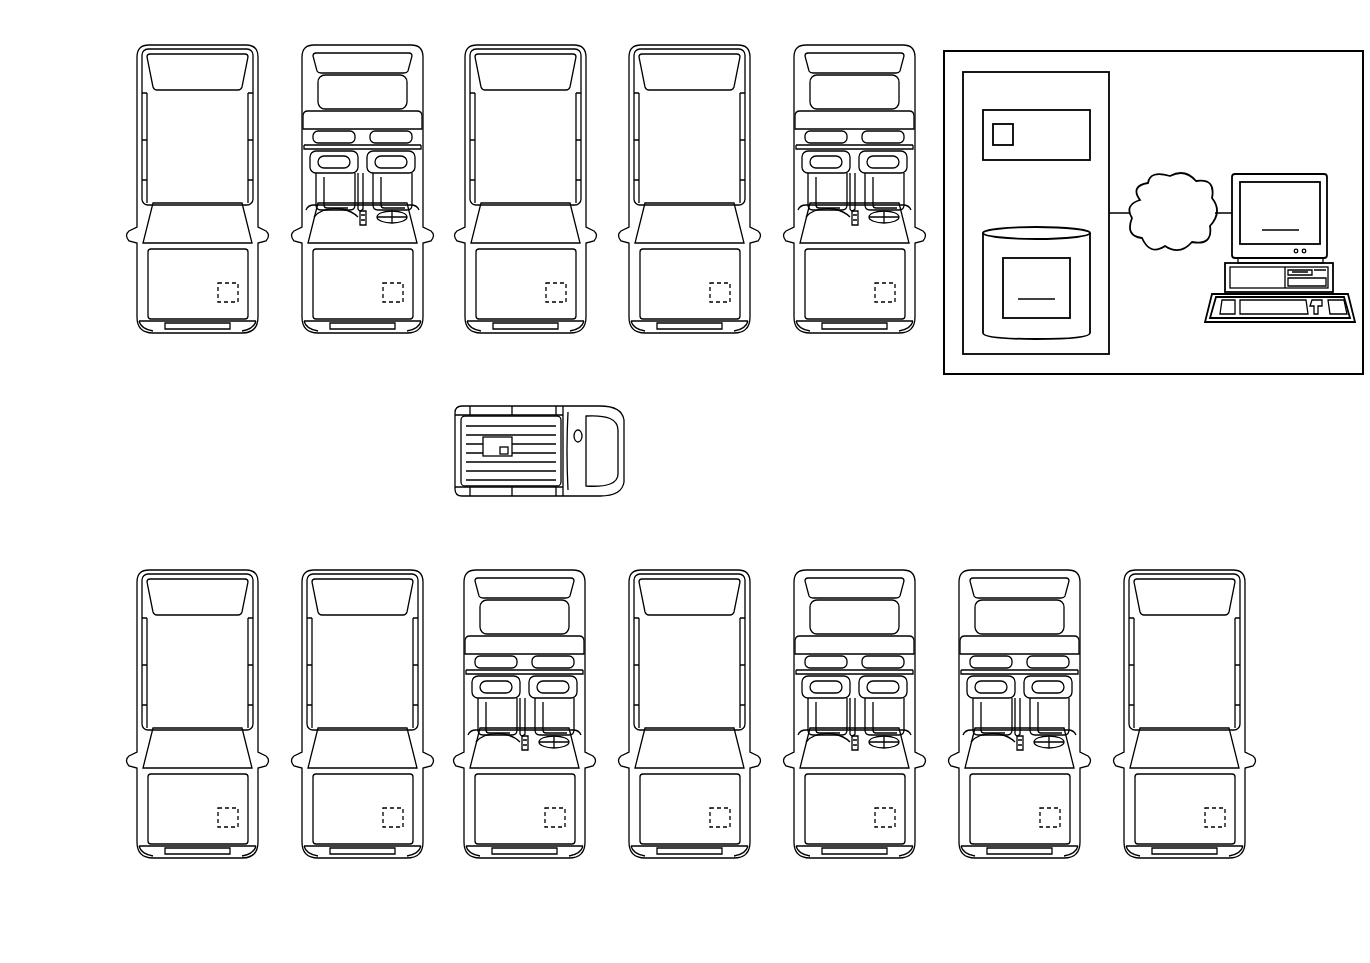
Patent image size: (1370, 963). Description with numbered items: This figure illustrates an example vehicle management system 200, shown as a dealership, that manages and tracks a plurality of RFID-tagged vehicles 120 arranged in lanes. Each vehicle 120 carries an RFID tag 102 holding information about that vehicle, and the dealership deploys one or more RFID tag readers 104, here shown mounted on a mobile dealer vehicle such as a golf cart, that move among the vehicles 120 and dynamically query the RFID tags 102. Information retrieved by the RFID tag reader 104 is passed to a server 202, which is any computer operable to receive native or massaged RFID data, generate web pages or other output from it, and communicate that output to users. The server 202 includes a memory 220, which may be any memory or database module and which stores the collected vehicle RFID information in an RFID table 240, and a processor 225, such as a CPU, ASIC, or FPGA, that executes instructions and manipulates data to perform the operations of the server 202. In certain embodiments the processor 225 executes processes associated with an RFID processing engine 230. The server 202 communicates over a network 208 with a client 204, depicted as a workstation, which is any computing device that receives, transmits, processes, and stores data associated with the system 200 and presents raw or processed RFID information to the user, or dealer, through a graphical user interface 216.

The RFID tag 102 is at (1203, 817).
The RFID tag reader 104 is at (486, 447).
The vehicle 120 is at (192, 334).
The vehicle management system 200 is at (1286, 635).
The server 202 is at (1112, 111).
The client 204 is at (1286, 235).
The network 208 is at (1189, 183).
The graphical user interface 216 is at (1281, 174).
The memory 220 is at (1031, 236).
The processor 225 is at (1057, 160).
The RFID processing engine 230 is at (1013, 134).
The RFID table 240 is at (1036, 288).